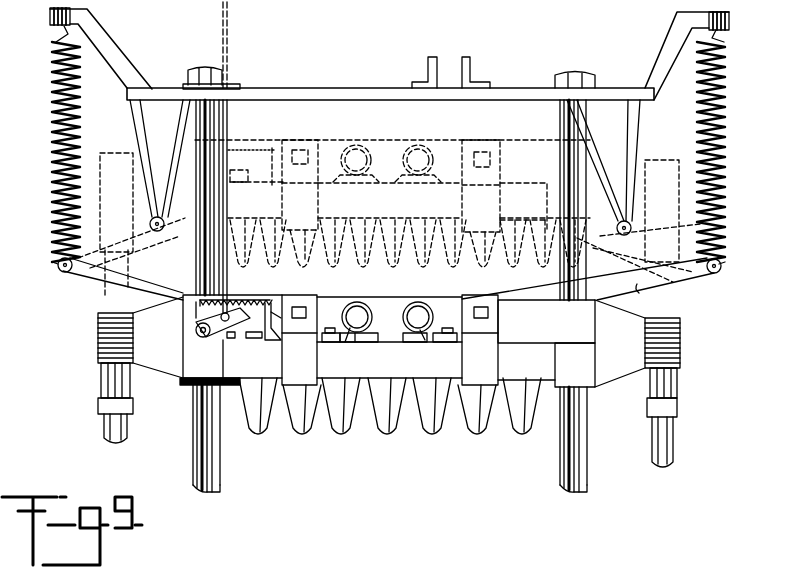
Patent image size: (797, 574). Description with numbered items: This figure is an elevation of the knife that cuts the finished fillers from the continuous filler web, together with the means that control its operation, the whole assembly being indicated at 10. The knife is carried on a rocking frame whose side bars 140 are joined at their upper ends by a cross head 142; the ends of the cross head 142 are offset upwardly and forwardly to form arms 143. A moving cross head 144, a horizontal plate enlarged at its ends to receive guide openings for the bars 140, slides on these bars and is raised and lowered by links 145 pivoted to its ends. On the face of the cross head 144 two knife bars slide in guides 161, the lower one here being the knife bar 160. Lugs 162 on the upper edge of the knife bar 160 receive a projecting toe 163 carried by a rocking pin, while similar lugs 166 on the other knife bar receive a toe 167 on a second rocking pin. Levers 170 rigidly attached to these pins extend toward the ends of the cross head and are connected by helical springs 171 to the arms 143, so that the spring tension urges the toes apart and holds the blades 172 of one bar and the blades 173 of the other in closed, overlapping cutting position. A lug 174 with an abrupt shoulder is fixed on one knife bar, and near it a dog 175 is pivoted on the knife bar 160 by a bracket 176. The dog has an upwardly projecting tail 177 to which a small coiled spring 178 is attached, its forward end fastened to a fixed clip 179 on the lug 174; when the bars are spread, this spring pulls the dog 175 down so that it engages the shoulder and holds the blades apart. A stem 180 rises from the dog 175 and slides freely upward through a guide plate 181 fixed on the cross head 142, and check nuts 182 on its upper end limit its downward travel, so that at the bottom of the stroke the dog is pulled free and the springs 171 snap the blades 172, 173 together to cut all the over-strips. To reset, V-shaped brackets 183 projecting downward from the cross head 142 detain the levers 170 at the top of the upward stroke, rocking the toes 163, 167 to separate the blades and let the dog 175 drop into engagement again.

The machine assembly 10 is at (35, 243).
The side bars 140 is at (218, 458).
The cross head 142 is at (335, 97).
The arms 143 is at (120, 55).
The moving cross head 144 is at (602, 365).
The links 145 is at (130, 432).
The knife bar 160 is at (414, 336).
The guides 161 is at (390, 340).
The lugs 162 is at (448, 342).
The projecting toe 163 is at (437, 331).
The lugs 166 is at (332, 331).
The toe 167 is at (352, 330).
The levers 170 is at (160, 282).
The helical springs 171 is at (53, 147).
The blades or cutters 172 is at (440, 414).
The blades 173 is at (427, 414).
The lug 174 is at (258, 335).
The dog 175 is at (217, 342).
The bracket 176 is at (203, 338).
The tail 177 is at (200, 312).
The coiled spring 178 is at (252, 297).
The fixed clip 179 is at (280, 328).
The stem 180 is at (230, 122).
The guide plate 181 is at (232, 78).
The stops or check nuts 182 is at (220, 63).
The brackets 183 is at (145, 175).